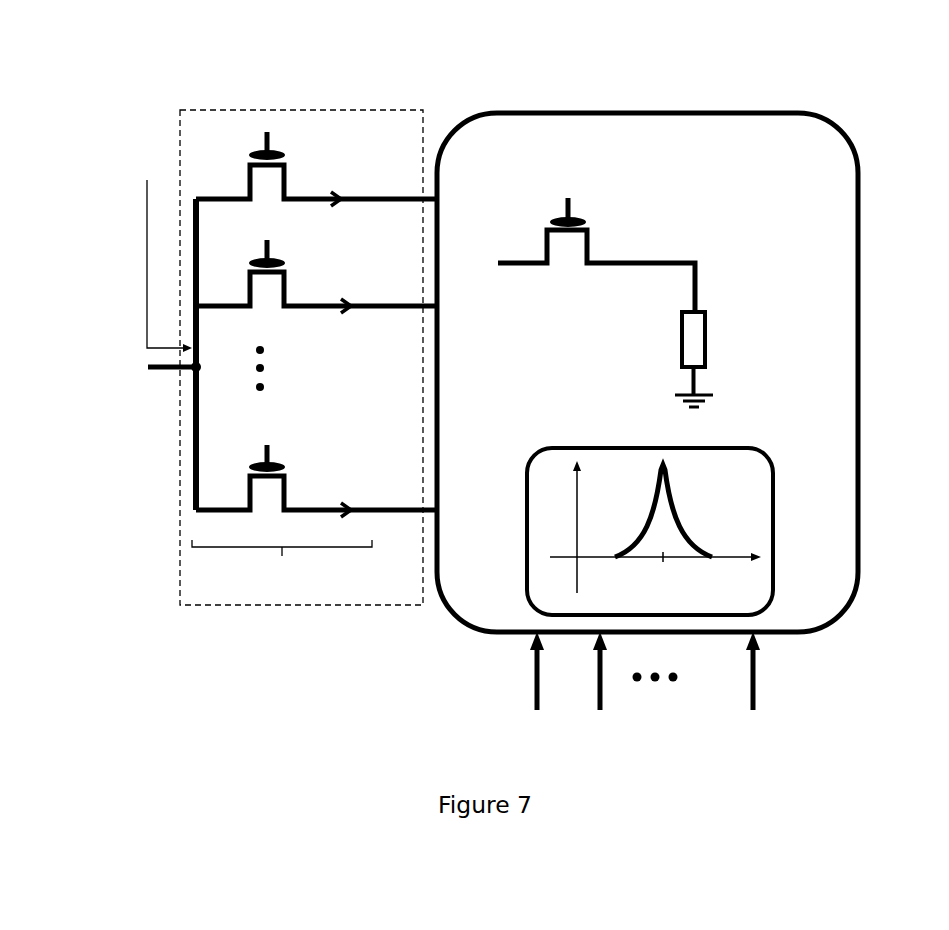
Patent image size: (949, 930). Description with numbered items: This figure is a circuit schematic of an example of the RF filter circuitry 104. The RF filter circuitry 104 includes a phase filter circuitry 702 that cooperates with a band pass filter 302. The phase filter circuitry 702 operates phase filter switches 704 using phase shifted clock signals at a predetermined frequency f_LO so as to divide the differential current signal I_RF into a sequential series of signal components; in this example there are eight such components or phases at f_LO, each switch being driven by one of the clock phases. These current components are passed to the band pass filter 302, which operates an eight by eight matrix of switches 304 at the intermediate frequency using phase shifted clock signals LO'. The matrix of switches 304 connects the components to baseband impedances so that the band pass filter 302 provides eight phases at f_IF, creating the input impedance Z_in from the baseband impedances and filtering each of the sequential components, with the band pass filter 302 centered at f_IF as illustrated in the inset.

The RF filter circuitry 104 is at (534, 60).
The band pass filter circuitry 302 is at (858, 158).
The matrix of switches 304 is at (590, 244).
The phase filter circuitry 702 is at (287, 612).
The phase filter switches 704 is at (247, 180).